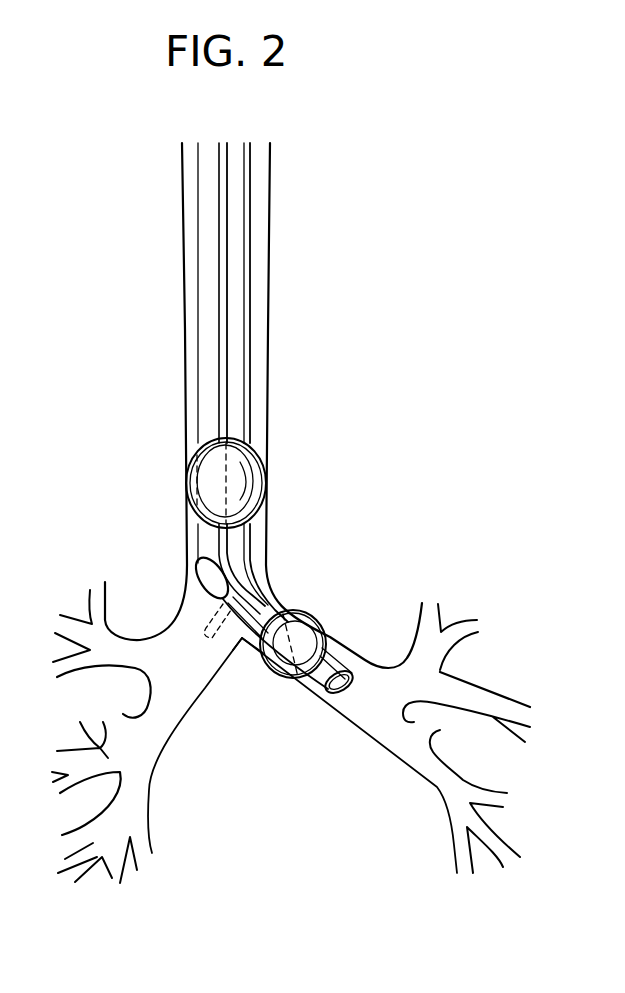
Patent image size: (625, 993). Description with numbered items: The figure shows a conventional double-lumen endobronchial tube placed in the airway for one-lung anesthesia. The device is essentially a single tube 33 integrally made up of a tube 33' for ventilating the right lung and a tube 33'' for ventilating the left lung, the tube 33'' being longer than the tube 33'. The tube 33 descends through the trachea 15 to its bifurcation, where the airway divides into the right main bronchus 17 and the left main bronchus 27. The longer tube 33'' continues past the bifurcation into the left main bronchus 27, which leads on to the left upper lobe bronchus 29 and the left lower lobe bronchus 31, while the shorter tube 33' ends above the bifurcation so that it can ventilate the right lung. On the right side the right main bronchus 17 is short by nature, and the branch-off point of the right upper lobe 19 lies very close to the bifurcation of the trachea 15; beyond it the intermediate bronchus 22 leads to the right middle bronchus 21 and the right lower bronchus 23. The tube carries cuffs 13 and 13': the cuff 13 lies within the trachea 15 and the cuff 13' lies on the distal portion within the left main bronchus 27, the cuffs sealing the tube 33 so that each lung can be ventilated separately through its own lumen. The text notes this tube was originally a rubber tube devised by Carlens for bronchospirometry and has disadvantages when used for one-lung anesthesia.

The cuff 13 is at (258, 483).
The cuff 13' is at (300, 618).
The trachea 15 is at (262, 273).
The right main bronchus 17 is at (193, 670).
The right upper lobe 19 is at (135, 660).
The right middle bronchus 21 is at (104, 711).
The intermediate bronchus 22 is at (163, 713).
The right lower bronchus 23 is at (133, 805).
The left main bronchus 27 is at (314, 692).
The left upper lobe bronchus 29 is at (418, 668).
The left lower lobe bronchus 31 is at (445, 777).
The double-lumen endobronchial tube 33 is at (270, 416).
The tube for ventilating the right lung 33' is at (199, 390).
The tube for ventilating the left lung 33'' is at (285, 374).